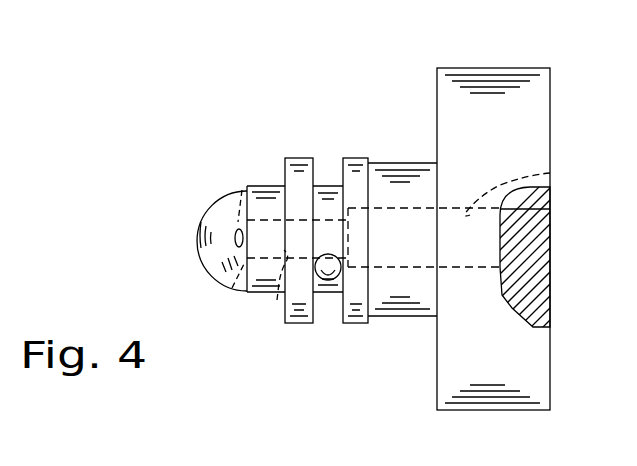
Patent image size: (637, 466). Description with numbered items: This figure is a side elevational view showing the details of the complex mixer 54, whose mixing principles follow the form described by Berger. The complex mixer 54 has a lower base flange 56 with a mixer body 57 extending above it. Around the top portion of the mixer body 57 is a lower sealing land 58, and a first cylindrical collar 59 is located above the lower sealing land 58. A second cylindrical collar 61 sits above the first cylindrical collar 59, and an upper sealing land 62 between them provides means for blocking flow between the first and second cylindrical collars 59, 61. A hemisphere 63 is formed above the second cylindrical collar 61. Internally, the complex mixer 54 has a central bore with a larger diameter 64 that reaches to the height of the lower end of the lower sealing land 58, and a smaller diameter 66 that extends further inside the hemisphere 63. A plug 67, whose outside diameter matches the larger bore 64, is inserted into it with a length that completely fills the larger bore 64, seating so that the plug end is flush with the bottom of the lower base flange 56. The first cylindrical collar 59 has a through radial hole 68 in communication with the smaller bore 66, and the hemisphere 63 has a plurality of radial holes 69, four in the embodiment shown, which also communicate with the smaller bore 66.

The complex mixer 54 is at (408, 67).
The lower base flange 56 is at (520, 70).
The mixer body 57 is at (387, 163).
The lower sealing land 58 is at (353, 158).
The first cylindrical collar 59 is at (327, 186).
The second cylindrical collar 61 is at (267, 186).
The upper sealing land 62 is at (297, 158).
The hemisphere 63 is at (201, 217).
The larger diameter bore 64 is at (553, 173).
The smaller diameter bore 66 is at (277, 300).
The plug 67 is at (550, 241).
The through radial hole 68 is at (331, 281).
The radial holes 69 is at (242, 190).